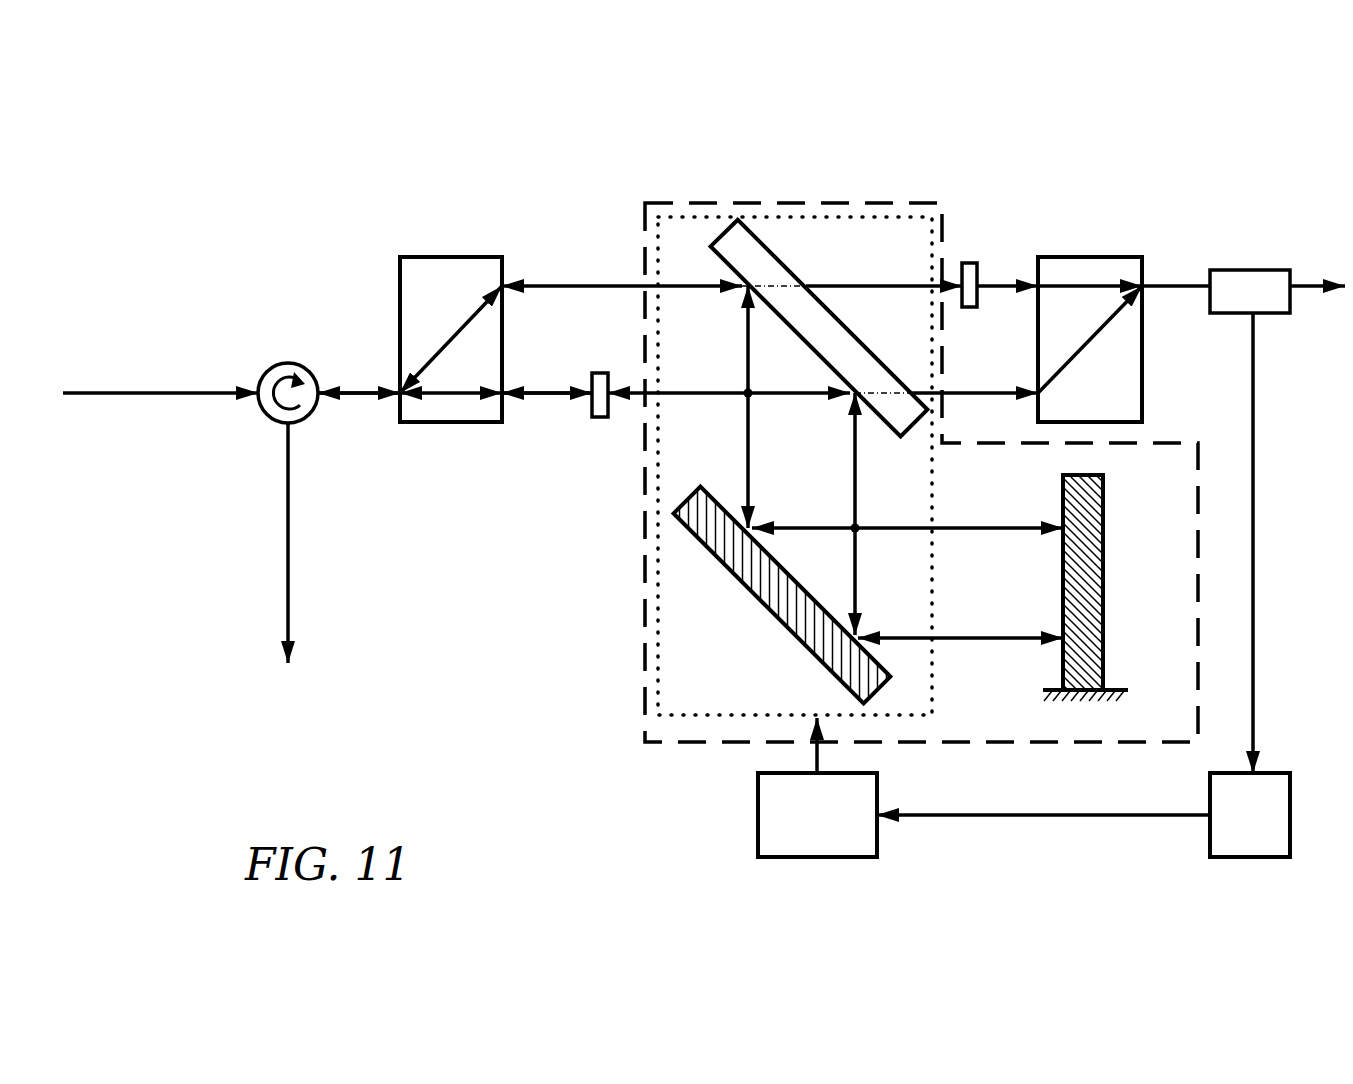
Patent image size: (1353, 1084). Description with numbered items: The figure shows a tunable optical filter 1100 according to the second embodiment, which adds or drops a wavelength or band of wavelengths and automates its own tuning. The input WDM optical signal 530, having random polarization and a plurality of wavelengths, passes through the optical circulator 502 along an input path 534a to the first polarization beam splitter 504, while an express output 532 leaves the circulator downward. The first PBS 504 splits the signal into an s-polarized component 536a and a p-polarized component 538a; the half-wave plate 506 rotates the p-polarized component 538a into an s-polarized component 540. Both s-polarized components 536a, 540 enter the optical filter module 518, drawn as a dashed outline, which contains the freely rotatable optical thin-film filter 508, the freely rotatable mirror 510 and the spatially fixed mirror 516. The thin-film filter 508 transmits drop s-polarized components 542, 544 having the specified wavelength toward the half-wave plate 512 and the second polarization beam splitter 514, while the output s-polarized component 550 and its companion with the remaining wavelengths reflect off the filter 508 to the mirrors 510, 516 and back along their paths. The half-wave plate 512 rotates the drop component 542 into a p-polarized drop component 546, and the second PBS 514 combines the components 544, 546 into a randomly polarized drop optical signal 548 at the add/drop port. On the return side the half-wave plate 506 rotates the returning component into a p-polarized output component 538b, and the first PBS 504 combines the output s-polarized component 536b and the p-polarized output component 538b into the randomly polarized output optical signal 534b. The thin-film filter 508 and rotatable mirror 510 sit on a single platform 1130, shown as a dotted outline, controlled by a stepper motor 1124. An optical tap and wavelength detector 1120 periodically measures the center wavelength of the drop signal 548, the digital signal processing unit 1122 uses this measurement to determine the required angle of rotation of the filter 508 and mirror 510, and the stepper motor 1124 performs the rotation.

The optical add/drop system 1100 is at (248, 184).
The optical circulator 502 is at (268, 370).
The first polarization beam splitter 504 is at (449, 257).
The half-wave plate 506 is at (603, 420).
The optical thin-film filter 508 is at (734, 230).
The rotatable mirror 510 is at (770, 612).
The half-wave plate 512 is at (963, 260).
The second polarization beam splitter 514 is at (1093, 255).
The spatially fixed mirror 516 is at (1103, 635).
The optical filter module 518 is at (642, 648).
The input WDM optical signal 530 is at (252, 393).
The express output port 532 is at (284, 485).
The optical path 534a is at (380, 390).
The output optical signal 534b is at (340, 400).
The s-polarized component 536a is at (700, 284).
The output s-polarized component 536b is at (540, 282).
The p-polarized component 538a is at (572, 400).
The p-polarized output component 538b is at (516, 388).
The s-polarized component 540 is at (847, 404).
The drop s-polarized component 542 is at (822, 280).
The drop s-polarized component 544 is at (975, 389).
The p-polarized drop component 546 is at (1002, 281).
The drop optical signal 548 is at (1168, 290).
The output s-polarized component 550 is at (747, 497).
The optical tap and wavelength detector 1120 is at (1270, 315).
The digital signal processing unit 1122 is at (1210, 843).
The stepper motor 1124 is at (835, 860).
The single platform 1130 is at (692, 710).